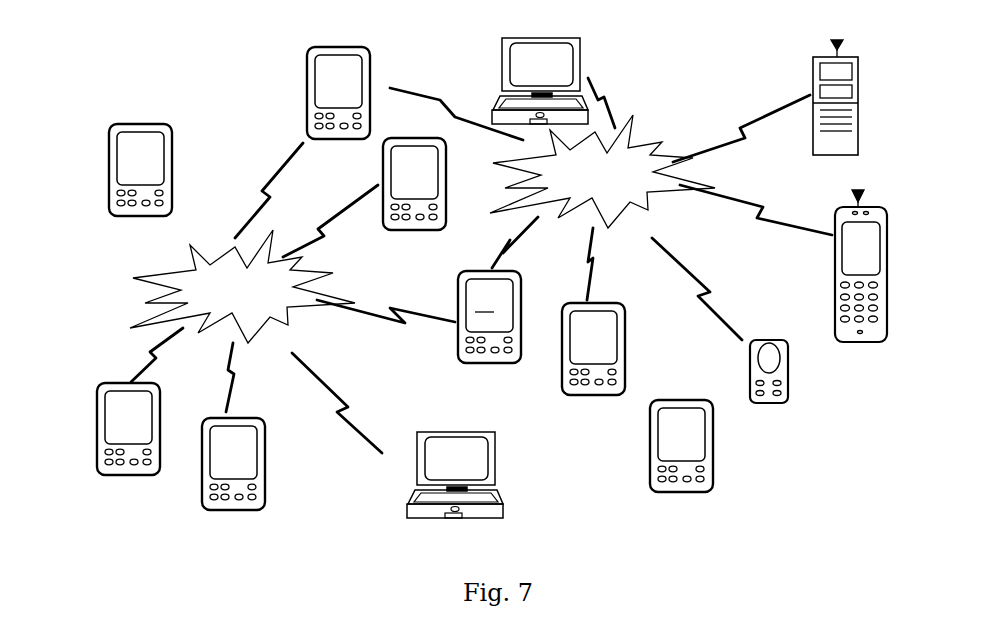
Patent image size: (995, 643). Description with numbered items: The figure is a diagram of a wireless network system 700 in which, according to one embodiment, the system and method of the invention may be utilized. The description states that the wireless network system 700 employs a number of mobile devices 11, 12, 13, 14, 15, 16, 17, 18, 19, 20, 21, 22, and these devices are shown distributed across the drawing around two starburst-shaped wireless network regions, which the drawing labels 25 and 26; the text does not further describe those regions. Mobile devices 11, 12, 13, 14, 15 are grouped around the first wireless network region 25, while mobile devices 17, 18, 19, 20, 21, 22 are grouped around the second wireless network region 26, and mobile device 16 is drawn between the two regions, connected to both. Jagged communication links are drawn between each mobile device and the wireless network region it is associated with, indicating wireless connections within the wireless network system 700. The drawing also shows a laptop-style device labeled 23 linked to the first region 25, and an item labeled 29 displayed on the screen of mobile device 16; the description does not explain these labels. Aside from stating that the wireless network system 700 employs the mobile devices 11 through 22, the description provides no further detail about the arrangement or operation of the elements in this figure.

The mobile device 11 is at (137, 216).
The mobile device 12 is at (335, 139).
The mobile device 13 is at (411, 230).
The mobile device 14 is at (268, 446).
The mobile device 15 is at (125, 475).
The mobile device 16 is at (486, 363).
The mobile device 17 is at (590, 395).
The mobile device 18 is at (678, 492).
The mobile device 19 is at (770, 405).
The mobile device 20 is at (862, 348).
The mobile device 21 is at (858, 154).
The mobile device 22 is at (584, 53).
The laptop computer 23 is at (497, 450).
The wireless network 25 is at (288, 326).
The wireless network 26 is at (648, 211).
The display content 29 is at (484, 305).
The wireless network system 700 is at (160, 289).